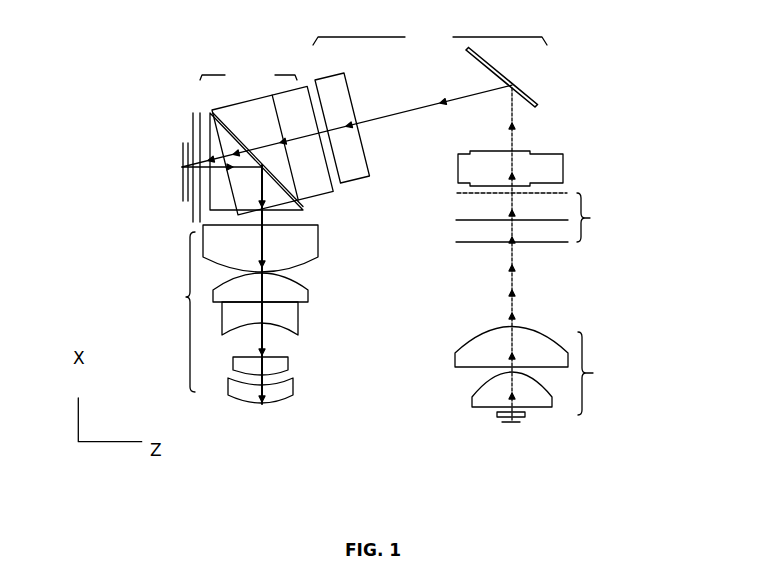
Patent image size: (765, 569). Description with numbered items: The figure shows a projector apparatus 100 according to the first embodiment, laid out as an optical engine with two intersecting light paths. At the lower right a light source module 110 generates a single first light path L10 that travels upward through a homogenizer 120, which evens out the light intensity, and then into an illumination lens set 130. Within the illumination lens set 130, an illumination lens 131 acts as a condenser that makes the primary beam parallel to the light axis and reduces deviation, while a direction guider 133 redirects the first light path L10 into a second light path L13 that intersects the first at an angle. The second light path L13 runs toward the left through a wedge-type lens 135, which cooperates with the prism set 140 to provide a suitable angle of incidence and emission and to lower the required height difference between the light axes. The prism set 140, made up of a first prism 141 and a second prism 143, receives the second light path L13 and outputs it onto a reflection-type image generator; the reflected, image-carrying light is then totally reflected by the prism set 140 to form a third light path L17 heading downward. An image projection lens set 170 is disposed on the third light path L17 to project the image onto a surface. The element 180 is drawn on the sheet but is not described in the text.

The projector apparatus 100 is at (400, 428).
The light source module 110 is at (543, 375).
The homogenizer 120 is at (542, 217).
The illumination lens set 130 is at (461, 113).
The illumination lens 131 is at (564, 170).
The direction guider 133 is at (515, 84).
The wedge-type lens 135 is at (357, 182).
The prism set 140 is at (229, 145).
The first prism 141 is at (225, 101).
The second prism 143 is at (220, 213).
The image projection lens set 170 is at (235, 314).
The light modulation element 180 is at (182, 166).
The first light path L10 is at (513, 286).
The second light path L13 is at (396, 120).
The third light path L17 is at (265, 343).